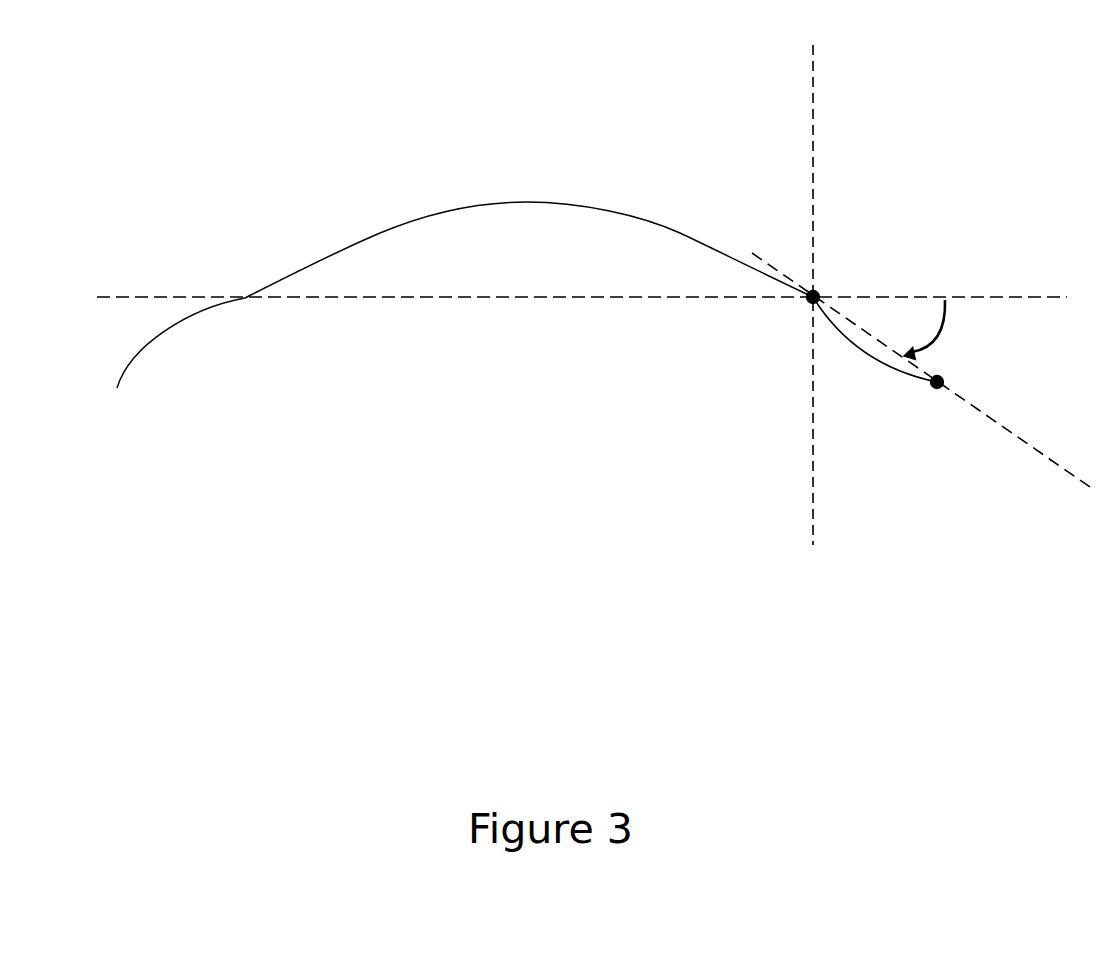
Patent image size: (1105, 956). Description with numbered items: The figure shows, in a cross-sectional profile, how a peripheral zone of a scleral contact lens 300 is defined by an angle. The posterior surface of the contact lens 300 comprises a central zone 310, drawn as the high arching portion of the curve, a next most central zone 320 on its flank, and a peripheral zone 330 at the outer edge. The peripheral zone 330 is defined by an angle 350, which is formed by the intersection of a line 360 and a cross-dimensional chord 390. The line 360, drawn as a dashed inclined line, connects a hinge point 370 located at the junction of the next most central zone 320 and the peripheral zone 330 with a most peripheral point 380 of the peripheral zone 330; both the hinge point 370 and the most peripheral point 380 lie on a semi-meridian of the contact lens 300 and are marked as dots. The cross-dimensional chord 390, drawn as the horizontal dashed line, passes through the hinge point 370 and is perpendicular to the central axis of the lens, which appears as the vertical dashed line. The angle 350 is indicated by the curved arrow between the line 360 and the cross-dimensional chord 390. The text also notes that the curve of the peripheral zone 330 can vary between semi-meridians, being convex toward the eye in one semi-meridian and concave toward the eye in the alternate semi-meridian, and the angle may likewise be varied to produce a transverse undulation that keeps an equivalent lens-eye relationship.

The scleral contact lens 300 is at (845, 285).
The central zone 310 is at (437, 203).
The next most central zone 320 is at (290, 263).
The peripheral zone 330 is at (117, 350).
The angle 350 is at (947, 330).
The line 360 is at (1018, 450).
The hinge point 370 is at (808, 302).
The most peripheral point 380 is at (932, 388).
The cross-dimensional chord 390 is at (1017, 290).